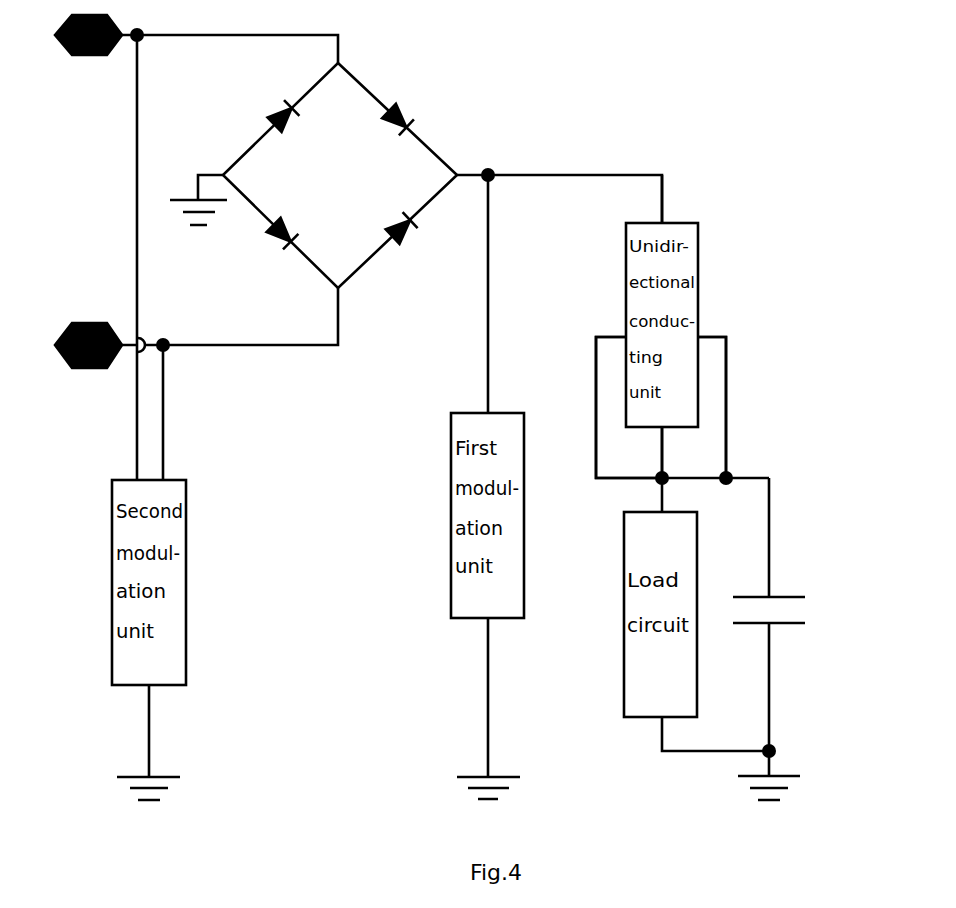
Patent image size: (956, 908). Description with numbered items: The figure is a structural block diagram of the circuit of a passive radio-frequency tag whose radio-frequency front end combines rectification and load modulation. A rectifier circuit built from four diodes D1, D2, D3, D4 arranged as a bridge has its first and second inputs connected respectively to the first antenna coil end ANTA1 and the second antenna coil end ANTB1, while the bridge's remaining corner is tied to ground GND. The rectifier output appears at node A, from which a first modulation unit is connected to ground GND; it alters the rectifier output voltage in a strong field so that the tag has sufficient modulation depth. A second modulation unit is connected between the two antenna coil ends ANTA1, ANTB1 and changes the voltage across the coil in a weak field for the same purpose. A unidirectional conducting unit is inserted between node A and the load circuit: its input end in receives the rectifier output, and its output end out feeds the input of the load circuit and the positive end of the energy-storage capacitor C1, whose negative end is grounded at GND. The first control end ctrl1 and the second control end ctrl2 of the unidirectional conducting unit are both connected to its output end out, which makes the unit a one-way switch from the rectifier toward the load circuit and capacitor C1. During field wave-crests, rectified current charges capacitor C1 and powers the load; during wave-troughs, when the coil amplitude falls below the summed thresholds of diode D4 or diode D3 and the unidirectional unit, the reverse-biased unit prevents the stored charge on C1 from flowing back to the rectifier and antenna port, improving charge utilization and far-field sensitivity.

The first antenna coil end ANTA1 is at (88, 51).
The second antenna coil end ANTB1 is at (90, 331).
The diode D1 is at (270, 111).
The diode D2 is at (272, 244).
The diode D3 is at (389, 220).
The diode D4 is at (383, 128).
The output of the rectifier circuit A is at (500, 160).
The energy-storage capacitor C1 is at (775, 630).
The first control end ctrl1 is at (599, 393).
The second control end ctrl2 is at (744, 393).
The input end of the unidirectional conducting unit in is at (681, 199).
The output end of the unidirectional conducting unit out is at (688, 452).
The ground GND is at (482, 505).